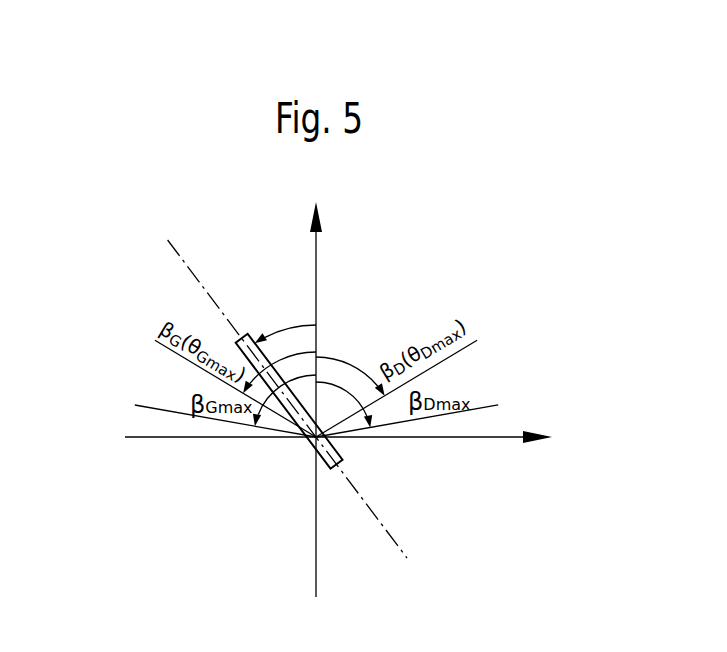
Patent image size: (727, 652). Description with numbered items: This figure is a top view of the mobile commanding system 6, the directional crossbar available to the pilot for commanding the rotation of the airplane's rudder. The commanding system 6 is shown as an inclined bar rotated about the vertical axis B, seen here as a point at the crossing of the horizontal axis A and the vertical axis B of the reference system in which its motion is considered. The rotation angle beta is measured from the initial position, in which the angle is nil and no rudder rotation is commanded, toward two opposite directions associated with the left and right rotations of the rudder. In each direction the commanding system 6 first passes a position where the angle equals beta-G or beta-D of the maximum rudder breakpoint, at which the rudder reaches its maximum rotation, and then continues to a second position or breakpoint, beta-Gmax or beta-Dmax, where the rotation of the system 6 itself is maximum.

The mobile commanding system 6 is at (343, 458).
The axis A- A is at (338, 456).
The vertical axis B- B is at (288, 399).